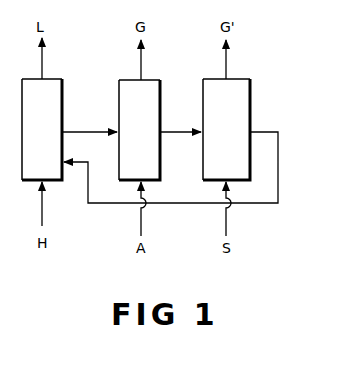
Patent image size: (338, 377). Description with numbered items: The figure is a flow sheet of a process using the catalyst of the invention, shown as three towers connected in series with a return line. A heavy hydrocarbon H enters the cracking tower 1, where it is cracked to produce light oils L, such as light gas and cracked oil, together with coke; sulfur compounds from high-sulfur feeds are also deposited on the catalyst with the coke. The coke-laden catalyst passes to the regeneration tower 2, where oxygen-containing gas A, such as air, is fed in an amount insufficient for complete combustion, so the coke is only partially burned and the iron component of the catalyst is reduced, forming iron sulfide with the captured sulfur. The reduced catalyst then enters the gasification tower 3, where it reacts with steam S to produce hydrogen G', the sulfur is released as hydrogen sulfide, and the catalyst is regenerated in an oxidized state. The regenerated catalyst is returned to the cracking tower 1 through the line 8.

The cracking tower 1 is at (60, 88).
The regeneration tower 2 is at (160, 87).
The gasification tower 3 is at (250, 88).
The line 8 is at (278, 190).